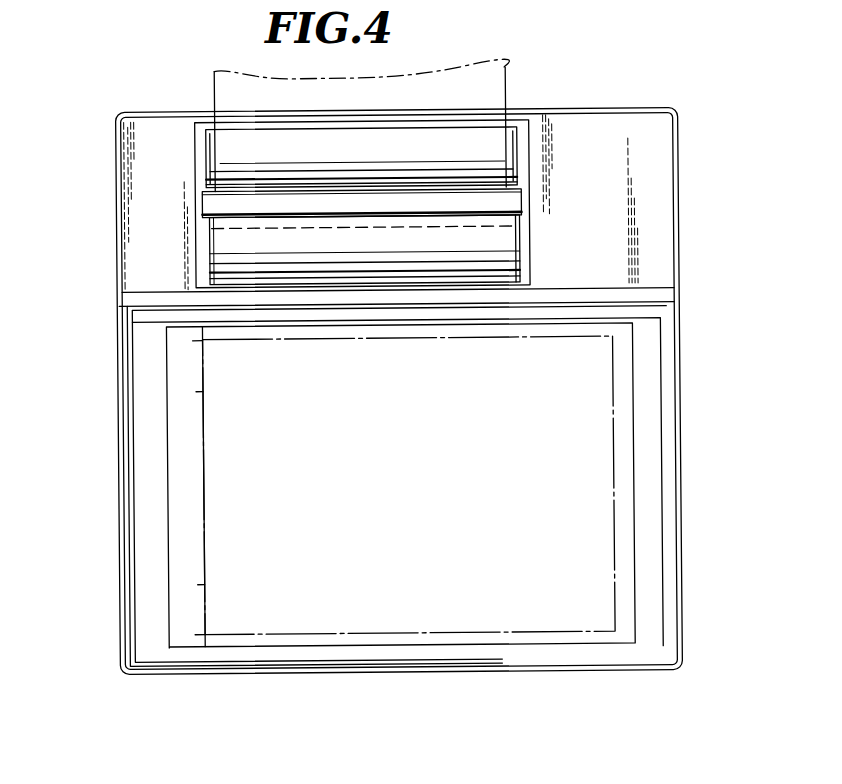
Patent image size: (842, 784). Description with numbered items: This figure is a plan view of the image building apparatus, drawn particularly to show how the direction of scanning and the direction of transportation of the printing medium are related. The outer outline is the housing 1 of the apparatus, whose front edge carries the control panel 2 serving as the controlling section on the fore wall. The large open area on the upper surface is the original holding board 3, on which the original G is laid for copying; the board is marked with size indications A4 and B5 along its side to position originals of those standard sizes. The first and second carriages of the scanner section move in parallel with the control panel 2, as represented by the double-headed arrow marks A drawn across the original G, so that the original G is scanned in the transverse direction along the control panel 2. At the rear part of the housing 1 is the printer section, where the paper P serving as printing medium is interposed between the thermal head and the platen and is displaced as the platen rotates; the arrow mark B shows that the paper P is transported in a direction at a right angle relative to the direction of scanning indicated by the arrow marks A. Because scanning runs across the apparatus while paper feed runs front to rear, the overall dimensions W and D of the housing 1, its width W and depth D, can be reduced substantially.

The housing 1 is at (682, 547).
The control panel 2 is at (497, 670).
The original holding board 3 is at (400, 518).
The original G is at (595, 428).
The paper P is at (427, 83).
The arrow marks A is at (431, 427).
The arrow mark B is at (367, 62).
The dimension D is at (114, 672).
The dimension W is at (124, 680).
The A4 size mark A4 is at (189, 489).
The B5 size mark B5 is at (189, 489).